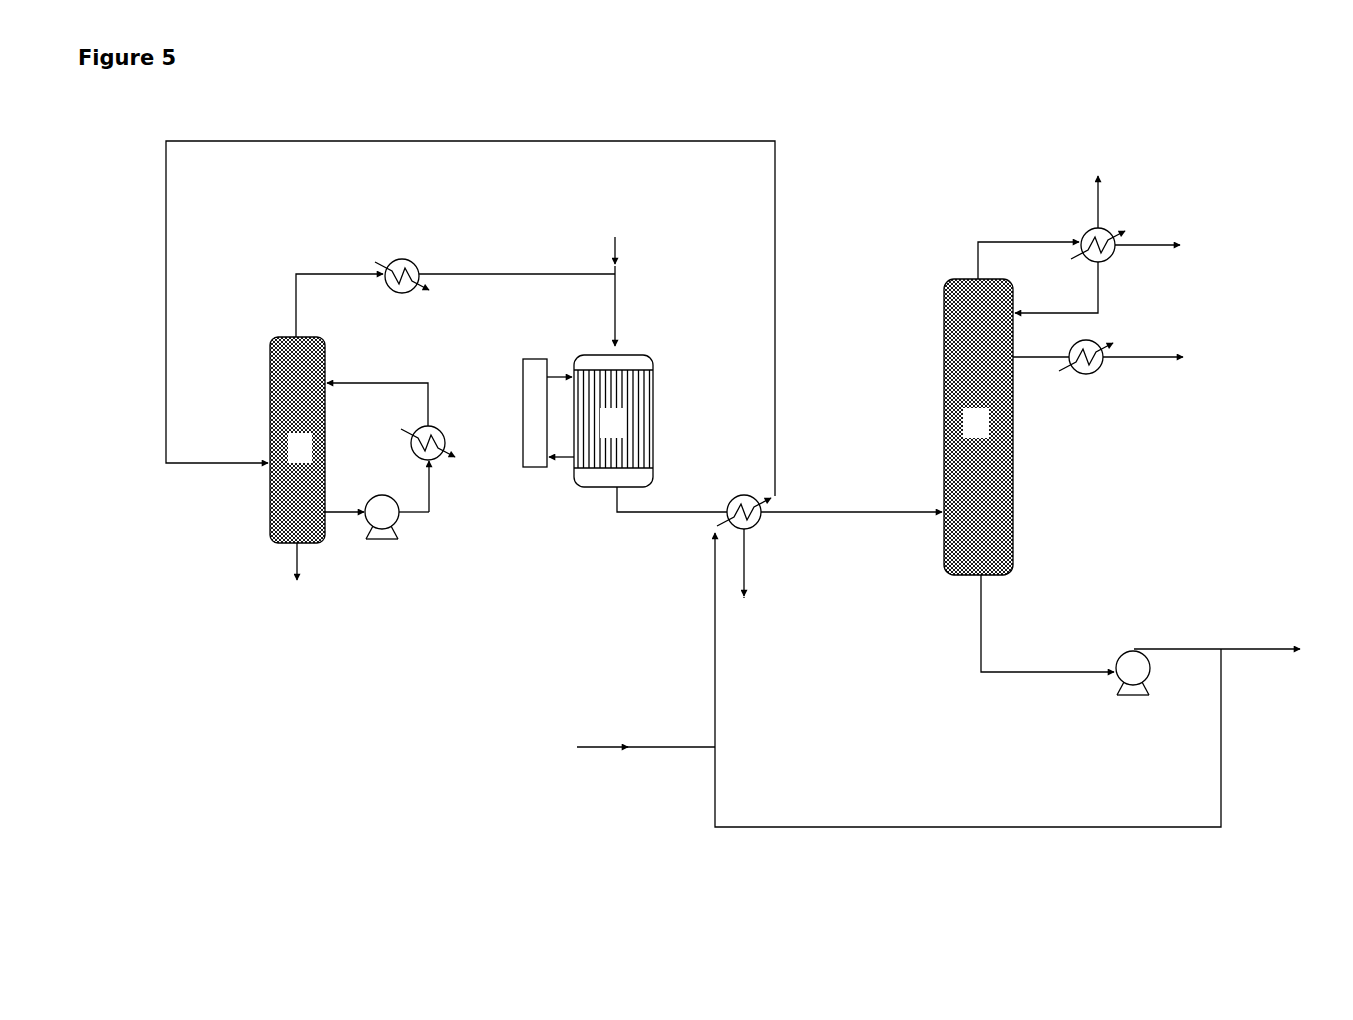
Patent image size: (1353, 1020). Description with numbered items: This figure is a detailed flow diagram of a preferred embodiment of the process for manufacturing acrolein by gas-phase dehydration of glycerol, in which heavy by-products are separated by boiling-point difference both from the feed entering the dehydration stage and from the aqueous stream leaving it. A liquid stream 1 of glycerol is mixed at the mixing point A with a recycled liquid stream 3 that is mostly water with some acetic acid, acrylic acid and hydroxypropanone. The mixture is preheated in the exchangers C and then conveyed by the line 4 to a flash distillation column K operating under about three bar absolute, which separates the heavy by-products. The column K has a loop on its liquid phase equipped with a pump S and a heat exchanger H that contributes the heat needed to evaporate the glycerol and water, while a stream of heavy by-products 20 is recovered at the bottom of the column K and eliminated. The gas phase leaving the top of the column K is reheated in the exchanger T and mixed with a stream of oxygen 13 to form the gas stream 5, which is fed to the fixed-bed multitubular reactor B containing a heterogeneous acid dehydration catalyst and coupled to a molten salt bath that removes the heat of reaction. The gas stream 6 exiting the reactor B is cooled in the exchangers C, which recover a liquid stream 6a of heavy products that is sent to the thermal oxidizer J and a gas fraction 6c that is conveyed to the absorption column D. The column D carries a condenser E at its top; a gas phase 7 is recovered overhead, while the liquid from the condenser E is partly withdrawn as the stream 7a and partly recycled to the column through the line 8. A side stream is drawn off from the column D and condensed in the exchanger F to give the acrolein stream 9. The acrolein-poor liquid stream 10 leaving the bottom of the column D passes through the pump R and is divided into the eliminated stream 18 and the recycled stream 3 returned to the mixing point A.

The liquid stream of glycerol 1 is at (636, 747).
The recycled liquid stream 3 is at (968, 738).
The recycle stream from exchanger C to reactor K 4 is at (460, 318).
The gas stream 5 is at (624, 306).
The gas stream exiting the reactor 6 is at (667, 515).
The liquid stream of heavy products 6a is at (760, 562).
The gas fraction 6c is at (851, 502).
The gas phase 7 is at (1100, 190).
The condensate product stream 7a is at (1168, 250).
The reflux stream to column D 8 is at (1056, 287).
The stream of acrolein 9 is at (1156, 360).
The acrolein-poor liquid stream 10 is at (1032, 623).
The stream of oxygen 13 is at (613, 240).
The eliminated stream 18 is at (1238, 650).
The stream of heavy by-products 20 is at (296, 580).
The flash distillation column K is at (297, 440).
The exchanger T is at (455, 281).
The heat exchanger H is at (391, 447).
The pump S is at (377, 506).
The fixed-bed multitubular reactor B is at (588, 421).
The exchangers C is at (744, 494).
The absorption column D is at (978, 427).
The condenser E is at (1064, 251).
The exchanger F is at (1075, 353).
The pump R is at (1133, 660).
The mixing point A is at (731, 645).
The thermal oxidizer J is at (748, 616).